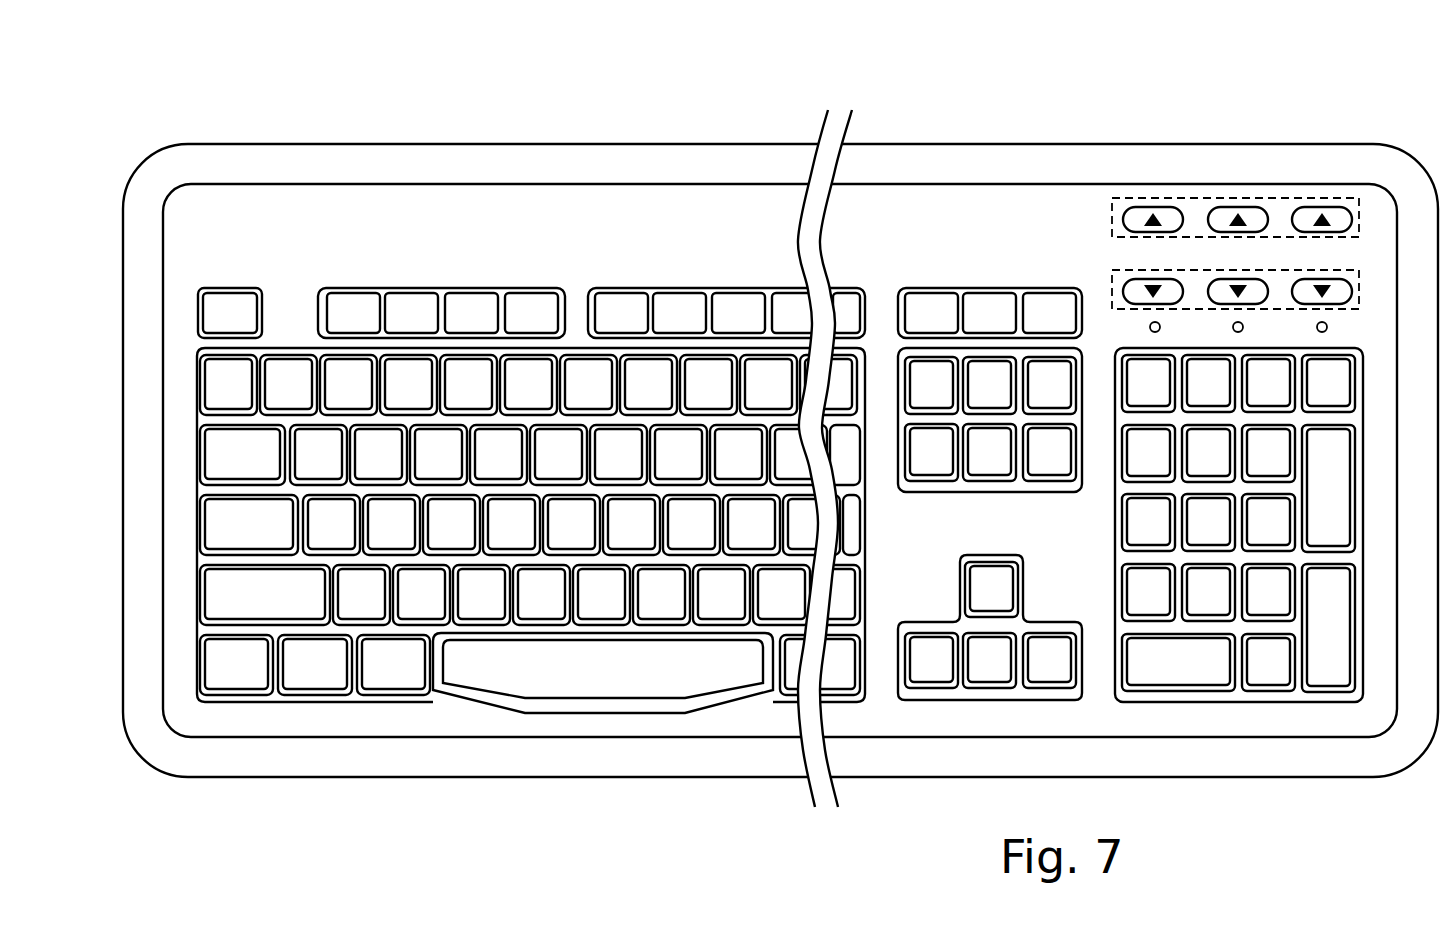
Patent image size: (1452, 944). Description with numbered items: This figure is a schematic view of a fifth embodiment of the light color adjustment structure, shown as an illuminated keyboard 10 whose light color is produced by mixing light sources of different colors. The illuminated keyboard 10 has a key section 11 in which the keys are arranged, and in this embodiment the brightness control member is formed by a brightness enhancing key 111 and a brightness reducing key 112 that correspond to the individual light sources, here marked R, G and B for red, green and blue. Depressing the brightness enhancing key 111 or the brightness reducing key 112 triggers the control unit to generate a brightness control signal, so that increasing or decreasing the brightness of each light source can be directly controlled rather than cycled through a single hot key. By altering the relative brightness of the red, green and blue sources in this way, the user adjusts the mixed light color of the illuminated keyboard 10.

The illuminated keyboard 10 is at (494, 134).
The key section 11 is at (650, 212).
The brightness enhancing key 111 is at (1354, 210).
The brightness reducing key 112 is at (1112, 282).